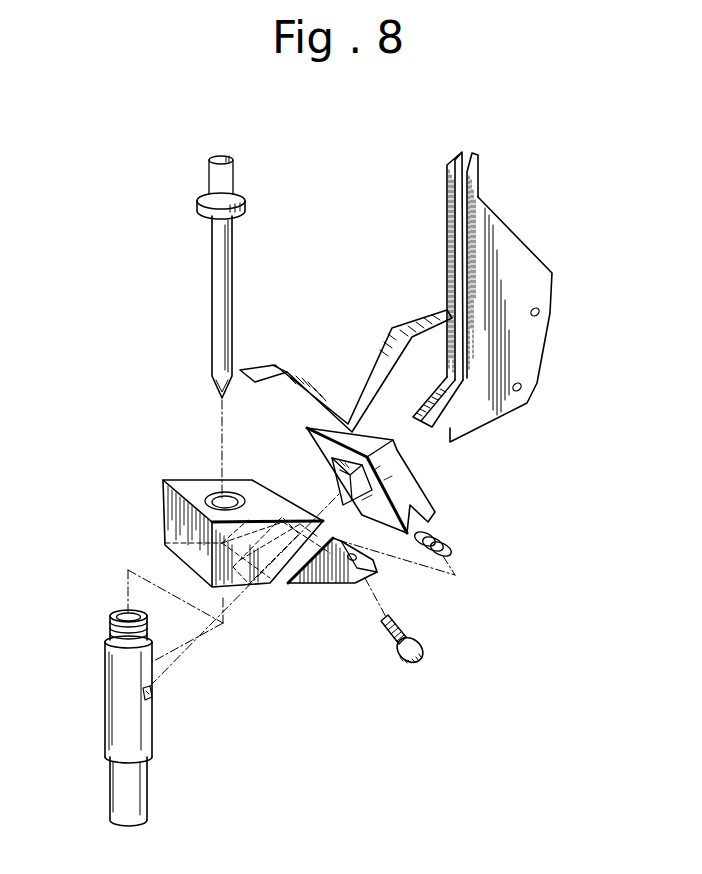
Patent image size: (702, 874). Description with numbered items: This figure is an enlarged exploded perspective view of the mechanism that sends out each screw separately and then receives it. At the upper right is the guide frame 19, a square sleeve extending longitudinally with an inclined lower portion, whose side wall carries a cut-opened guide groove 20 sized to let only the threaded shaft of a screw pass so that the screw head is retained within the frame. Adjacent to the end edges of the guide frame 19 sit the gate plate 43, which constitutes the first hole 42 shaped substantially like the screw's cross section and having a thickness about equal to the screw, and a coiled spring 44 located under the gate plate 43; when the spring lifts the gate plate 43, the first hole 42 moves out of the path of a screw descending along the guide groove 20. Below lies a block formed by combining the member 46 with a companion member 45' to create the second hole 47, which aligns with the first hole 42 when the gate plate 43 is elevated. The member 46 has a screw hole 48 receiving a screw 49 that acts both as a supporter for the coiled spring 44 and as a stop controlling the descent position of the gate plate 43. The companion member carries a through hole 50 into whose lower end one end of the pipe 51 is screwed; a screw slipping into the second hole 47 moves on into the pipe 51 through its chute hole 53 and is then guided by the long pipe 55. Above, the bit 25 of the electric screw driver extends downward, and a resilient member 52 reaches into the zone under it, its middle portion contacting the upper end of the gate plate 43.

The bit 25 is at (217, 273).
The resilient member 52 is at (315, 392).
The guide frame 19 is at (490, 393).
The guide groove 20 is at (450, 398).
The through hole 50 is at (215, 490).
The first hole 42 is at (350, 480).
The gate plate 43 is at (397, 487).
The coiled spring 44 is at (449, 542).
The member 46 is at (337, 575).
The second hole 47 is at (287, 545).
The pin 45' is at (245, 603).
The screw hole 48 is at (373, 572).
The screw 49 is at (421, 635).
The pipe 51 is at (115, 673).
The chute hole 53 is at (153, 692).
The long pipe 55 is at (120, 792).